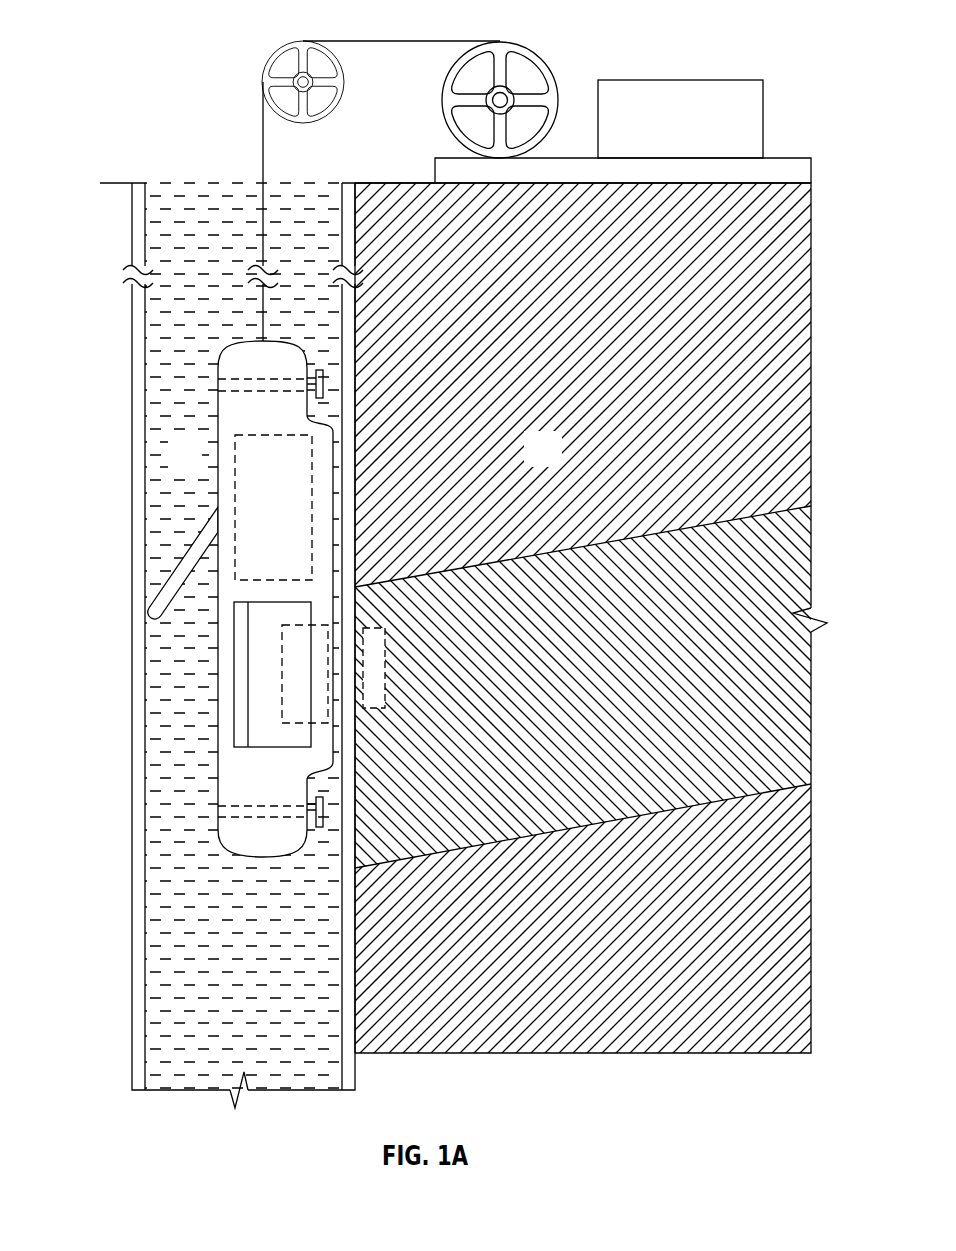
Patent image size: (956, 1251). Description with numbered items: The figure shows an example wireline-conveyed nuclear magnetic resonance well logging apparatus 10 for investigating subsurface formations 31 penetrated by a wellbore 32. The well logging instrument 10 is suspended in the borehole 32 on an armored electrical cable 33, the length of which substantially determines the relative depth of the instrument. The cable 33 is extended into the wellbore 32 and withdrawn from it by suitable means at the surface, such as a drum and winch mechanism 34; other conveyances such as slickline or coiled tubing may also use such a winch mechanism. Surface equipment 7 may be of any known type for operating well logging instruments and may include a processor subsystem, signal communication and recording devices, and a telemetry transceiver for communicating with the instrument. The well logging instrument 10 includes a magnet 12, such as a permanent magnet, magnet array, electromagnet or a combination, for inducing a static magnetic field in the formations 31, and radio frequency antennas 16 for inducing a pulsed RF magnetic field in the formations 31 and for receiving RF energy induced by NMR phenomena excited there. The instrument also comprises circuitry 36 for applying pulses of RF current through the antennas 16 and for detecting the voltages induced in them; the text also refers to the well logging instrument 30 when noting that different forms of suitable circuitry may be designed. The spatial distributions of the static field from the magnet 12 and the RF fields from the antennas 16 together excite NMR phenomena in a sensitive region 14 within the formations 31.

The surface equipment 7 is at (730, 80).
The well logging instrument 10 is at (212, 599).
The magnet 12 is at (234, 622).
The sensitive region 14 is at (388, 675).
The radio frequency antennas 16 is at (285, 723).
The well logging instrument 30 is at (218, 717).
The subsurface formations 31 is at (529, 462).
The wellbore 32 is at (199, 465).
The armored electrical cable 33 is at (262, 163).
The drum and winch mechanism 34 is at (541, 59).
The circuitry 36 is at (260, 521).